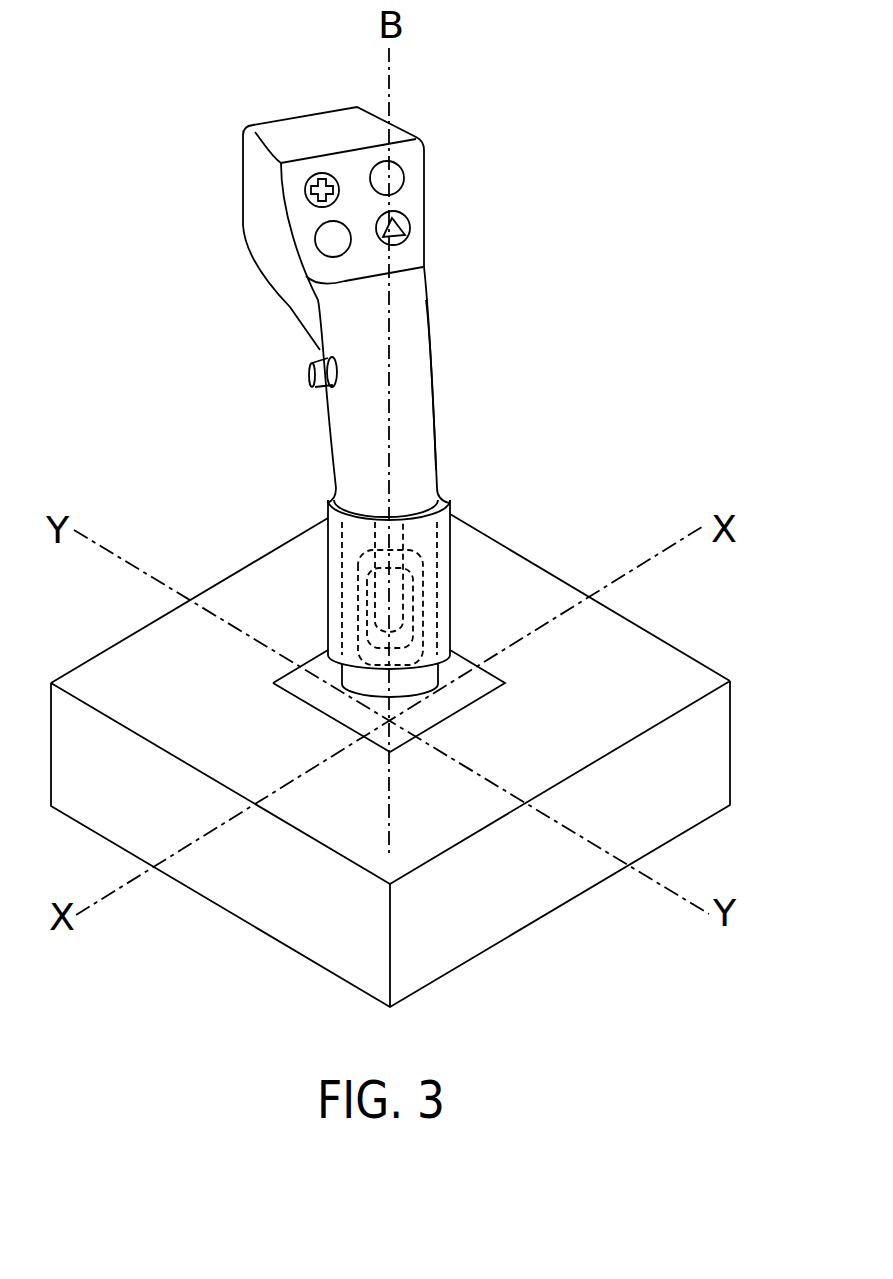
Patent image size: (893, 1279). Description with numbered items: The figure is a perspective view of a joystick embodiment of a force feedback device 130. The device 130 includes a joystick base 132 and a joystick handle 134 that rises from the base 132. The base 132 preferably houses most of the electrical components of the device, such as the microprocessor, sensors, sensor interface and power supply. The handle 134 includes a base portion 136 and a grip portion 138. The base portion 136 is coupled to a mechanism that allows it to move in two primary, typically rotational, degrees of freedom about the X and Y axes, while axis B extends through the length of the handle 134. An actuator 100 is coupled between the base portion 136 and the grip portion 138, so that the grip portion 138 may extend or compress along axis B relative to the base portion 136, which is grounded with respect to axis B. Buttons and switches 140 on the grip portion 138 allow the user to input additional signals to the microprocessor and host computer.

The actuator 100 is at (447, 602).
The force feedback device 130 is at (112, 396).
The joystick base 132 is at (685, 807).
The joystick handle 134 is at (384, 305).
The base portion 136 is at (430, 680).
The grip portion 138 is at (418, 318).
The buttons and switches 140 is at (323, 240).